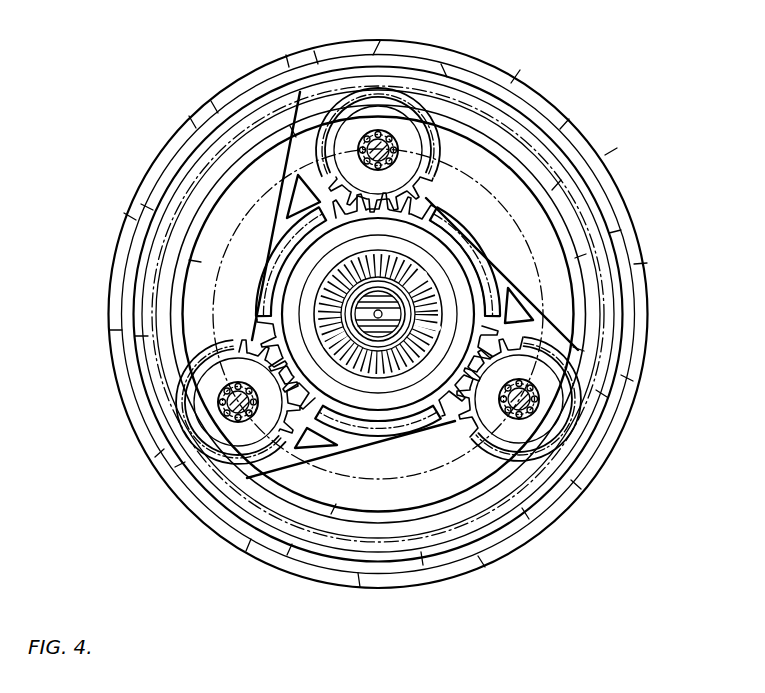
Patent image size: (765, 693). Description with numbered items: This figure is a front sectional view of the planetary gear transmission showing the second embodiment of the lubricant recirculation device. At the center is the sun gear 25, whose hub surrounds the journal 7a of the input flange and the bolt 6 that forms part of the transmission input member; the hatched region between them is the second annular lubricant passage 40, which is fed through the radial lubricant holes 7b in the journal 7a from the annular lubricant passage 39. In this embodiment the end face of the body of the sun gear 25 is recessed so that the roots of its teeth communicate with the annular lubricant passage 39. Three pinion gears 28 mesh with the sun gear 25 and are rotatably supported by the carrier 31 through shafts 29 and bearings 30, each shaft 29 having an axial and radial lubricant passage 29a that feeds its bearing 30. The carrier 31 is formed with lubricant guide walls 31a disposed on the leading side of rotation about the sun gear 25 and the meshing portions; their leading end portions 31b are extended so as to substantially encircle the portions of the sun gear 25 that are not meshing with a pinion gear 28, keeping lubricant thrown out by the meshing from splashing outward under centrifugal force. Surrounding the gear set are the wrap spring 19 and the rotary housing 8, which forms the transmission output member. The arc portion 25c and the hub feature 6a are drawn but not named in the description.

The bolt 6 is at (440, 400).
The sun gear hub 6a is at (376, 315).
The journal 7a is at (333, 260).
The radial lubricant holes 7b is at (506, 294).
The rotary housing 8 is at (606, 164).
The wrap spring 19 is at (612, 215).
The sun gear 25 is at (465, 231).
The ring gear arc portion 25c is at (445, 237).
The pinion gears 28 is at (360, 112).
The pinion shafts 29 is at (392, 130).
The lubricant passage 29a is at (380, 152).
The bearings 30 is at (406, 118).
The carrier 31 is at (378, 285).
The lubricant guide walls 31a is at (288, 207).
The leading end portions 31b is at (445, 206).
The annular lubricant passage 39 is at (317, 298).
The second annular lubricant passage 40 is at (378, 355).